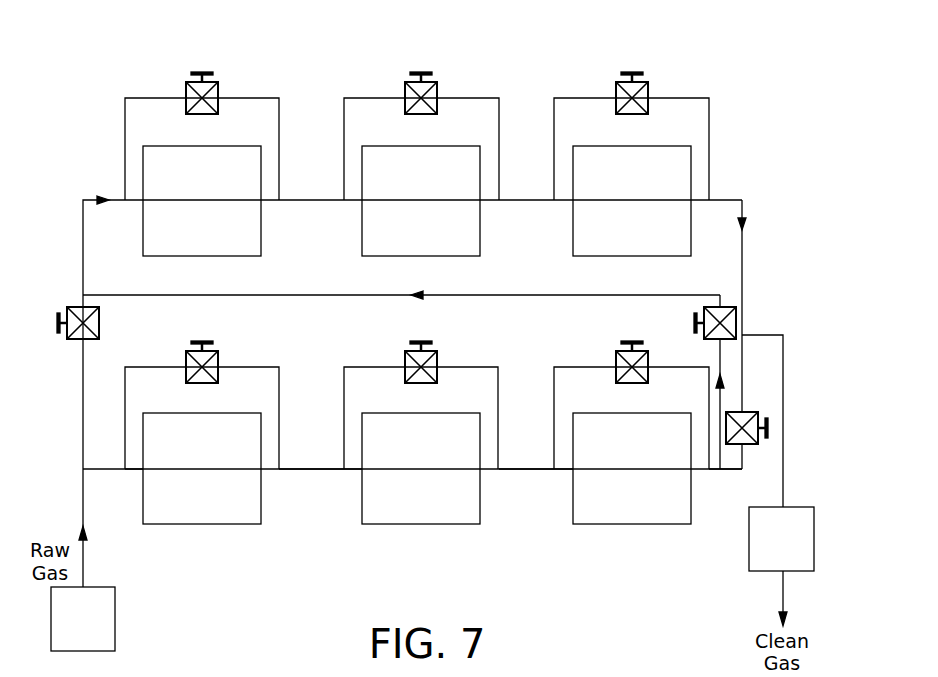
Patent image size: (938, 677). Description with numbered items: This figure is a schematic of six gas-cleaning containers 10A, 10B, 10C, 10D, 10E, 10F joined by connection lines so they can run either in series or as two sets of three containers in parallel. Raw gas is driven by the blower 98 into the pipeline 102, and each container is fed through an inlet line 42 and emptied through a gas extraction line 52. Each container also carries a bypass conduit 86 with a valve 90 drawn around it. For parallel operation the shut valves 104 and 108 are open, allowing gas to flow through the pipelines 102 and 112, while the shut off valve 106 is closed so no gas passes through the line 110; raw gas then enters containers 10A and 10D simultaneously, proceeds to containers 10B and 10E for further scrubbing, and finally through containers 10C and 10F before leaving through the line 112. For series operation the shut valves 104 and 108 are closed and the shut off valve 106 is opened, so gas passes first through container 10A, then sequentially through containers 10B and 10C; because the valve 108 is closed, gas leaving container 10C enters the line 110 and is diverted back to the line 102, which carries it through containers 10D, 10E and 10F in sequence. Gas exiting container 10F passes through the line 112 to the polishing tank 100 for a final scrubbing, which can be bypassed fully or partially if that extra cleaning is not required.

The container 10A is at (212, 525).
The container 10B is at (405, 525).
The container 10C is at (638, 525).
The container 10D is at (143, 220).
The container 10E is at (362, 220).
The container 10F is at (573, 220).
The inlet line 42 is at (135, 471).
The gas extraction line 52 is at (478, 98).
The bypass conduit 86 is at (152, 98).
The bypass valve 90 is at (204, 72).
The blower 98 is at (83, 619).
The polishing tank 100 is at (781, 539).
The pipeline 102 is at (83, 230).
The shut valve 104 is at (100, 325).
The shut off valve 106 is at (730, 305).
The shut valve 108 is at (745, 411).
The line 110 is at (710, 295).
The pipeline 112 is at (742, 247).